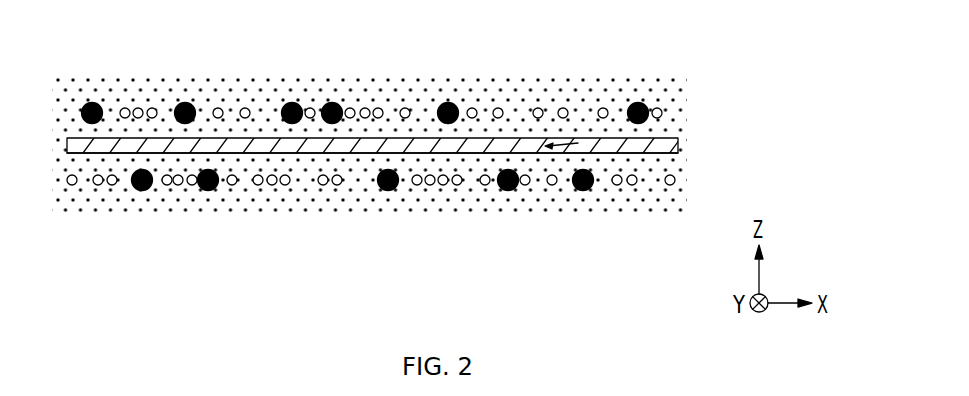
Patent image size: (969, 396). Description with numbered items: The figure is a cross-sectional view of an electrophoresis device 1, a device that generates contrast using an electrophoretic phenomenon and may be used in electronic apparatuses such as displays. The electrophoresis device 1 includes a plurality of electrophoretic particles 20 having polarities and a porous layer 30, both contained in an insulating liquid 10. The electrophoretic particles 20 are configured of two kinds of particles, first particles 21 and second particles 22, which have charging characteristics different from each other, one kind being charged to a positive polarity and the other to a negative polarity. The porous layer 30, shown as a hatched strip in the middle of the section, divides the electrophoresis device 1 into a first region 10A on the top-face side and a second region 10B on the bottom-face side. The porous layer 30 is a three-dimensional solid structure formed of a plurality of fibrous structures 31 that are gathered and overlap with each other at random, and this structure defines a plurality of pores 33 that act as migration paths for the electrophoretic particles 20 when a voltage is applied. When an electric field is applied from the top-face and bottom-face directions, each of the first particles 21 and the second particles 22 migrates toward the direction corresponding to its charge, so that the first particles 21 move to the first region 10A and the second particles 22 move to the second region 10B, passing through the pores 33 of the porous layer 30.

The electrophoresis device 1 is at (444, 162).
The insulating liquid 10 is at (411, 175).
The first region 10A is at (690, 78).
The second region 10B is at (690, 152).
The electrophoretic particles 20 is at (371, 210).
The first particles 21 is at (332, 124).
The second particles 22 is at (444, 186).
The porous layer 30 is at (452, 91).
The fibrous structure 31 is at (374, 145).
The pores 33 is at (590, 134).